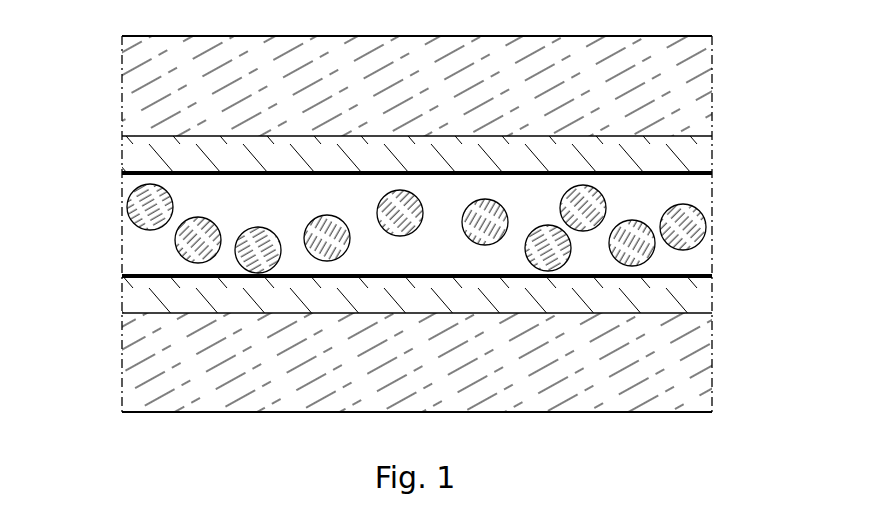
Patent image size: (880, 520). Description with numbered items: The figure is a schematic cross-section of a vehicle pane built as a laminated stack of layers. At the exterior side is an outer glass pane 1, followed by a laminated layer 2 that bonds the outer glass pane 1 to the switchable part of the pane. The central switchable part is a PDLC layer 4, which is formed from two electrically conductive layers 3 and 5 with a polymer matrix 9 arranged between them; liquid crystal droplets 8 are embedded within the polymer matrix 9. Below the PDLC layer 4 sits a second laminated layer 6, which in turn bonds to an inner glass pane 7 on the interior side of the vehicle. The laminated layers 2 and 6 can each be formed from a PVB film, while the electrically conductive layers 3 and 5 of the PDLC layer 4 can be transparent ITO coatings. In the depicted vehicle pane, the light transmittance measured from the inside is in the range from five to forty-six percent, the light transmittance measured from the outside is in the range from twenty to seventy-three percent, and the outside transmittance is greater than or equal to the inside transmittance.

The outer glass pane 1 is at (122, 87).
The laminated layer 2 is at (122, 154).
The electrically conductive layer 3 is at (122, 172).
The PDLC layer 4 is at (417, 225).
The electrically conductive layer 5 is at (122, 276).
The laminated layer 6 is at (120, 293).
The inner glass pane 7 is at (122, 362).
The liquid crystal droplets 8 is at (757, 277).
The polymer matrix 9 is at (682, 267).